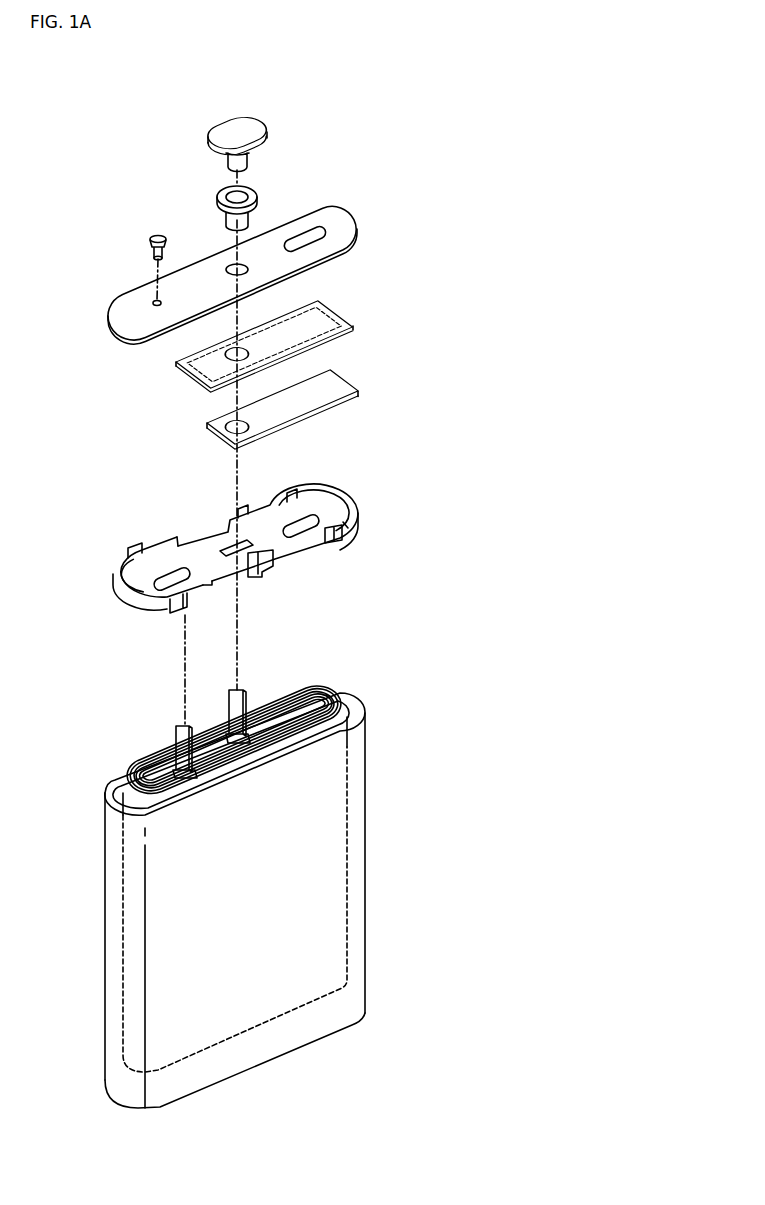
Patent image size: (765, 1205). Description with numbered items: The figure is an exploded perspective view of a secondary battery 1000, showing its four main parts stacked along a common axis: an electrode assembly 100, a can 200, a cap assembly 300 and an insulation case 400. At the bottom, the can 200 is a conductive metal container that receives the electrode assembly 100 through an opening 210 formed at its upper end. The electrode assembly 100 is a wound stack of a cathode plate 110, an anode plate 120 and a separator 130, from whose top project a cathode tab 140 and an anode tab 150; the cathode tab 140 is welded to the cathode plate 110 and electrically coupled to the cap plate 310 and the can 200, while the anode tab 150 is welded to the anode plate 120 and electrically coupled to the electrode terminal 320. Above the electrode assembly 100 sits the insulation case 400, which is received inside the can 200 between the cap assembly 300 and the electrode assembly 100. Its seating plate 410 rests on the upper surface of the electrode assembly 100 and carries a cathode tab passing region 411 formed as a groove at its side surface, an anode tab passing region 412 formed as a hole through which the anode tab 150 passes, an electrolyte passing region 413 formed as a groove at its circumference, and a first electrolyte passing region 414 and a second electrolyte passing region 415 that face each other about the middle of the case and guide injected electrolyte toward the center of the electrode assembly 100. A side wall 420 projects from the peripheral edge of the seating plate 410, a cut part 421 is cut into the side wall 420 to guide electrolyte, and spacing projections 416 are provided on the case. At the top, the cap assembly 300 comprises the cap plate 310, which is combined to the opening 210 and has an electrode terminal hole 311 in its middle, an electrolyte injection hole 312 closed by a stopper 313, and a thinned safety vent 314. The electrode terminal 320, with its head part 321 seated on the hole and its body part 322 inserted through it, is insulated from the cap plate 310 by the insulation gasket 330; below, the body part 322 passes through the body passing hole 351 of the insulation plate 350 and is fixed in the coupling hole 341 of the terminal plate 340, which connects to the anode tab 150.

The secondary battery 1000 is at (102, 100).
The electrode assembly 100 is at (265, 700).
The cathode plate 110 is at (352, 700).
The anode plate 120 is at (312, 690).
The separator 130 is at (338, 697).
The cathode tab 140 is at (185, 718).
The anode tab 150 is at (270, 683).
The can 200 is at (267, 900).
The opening 210 is at (353, 717).
The cap assembly 300 is at (410, 120).
The cap plate 310 is at (255, 271).
The electrode terminal hole 311 is at (231, 265).
The electrolyte injection hole 312 is at (154, 301).
The stopper 313 is at (158, 235).
The safety vent 314 is at (315, 243).
The electrode terminal 320 is at (236, 144).
The head part 321 is at (209, 143).
The body part 322 is at (228, 160).
The insulation gasket 330 is at (258, 193).
The terminal plate 340 is at (284, 405).
The coupling hole 341 is at (224, 432).
The insulation plate 350 is at (275, 343).
The body passing hole 351 is at (222, 356).
The insulation case 400 is at (245, 549).
The seating plate 410 is at (273, 520).
The cathode tab passing region 411 is at (200, 597).
The anode tab passing region 412 is at (300, 555).
The electrolyte passing region 413 is at (213, 540).
The first electrolyte passing region 414 is at (150, 582).
The second electrolyte passing region 415 is at (344, 524).
The spacing projection 416 is at (290, 488).
The side wall 420 is at (323, 483).
The cut part 421 is at (177, 533).